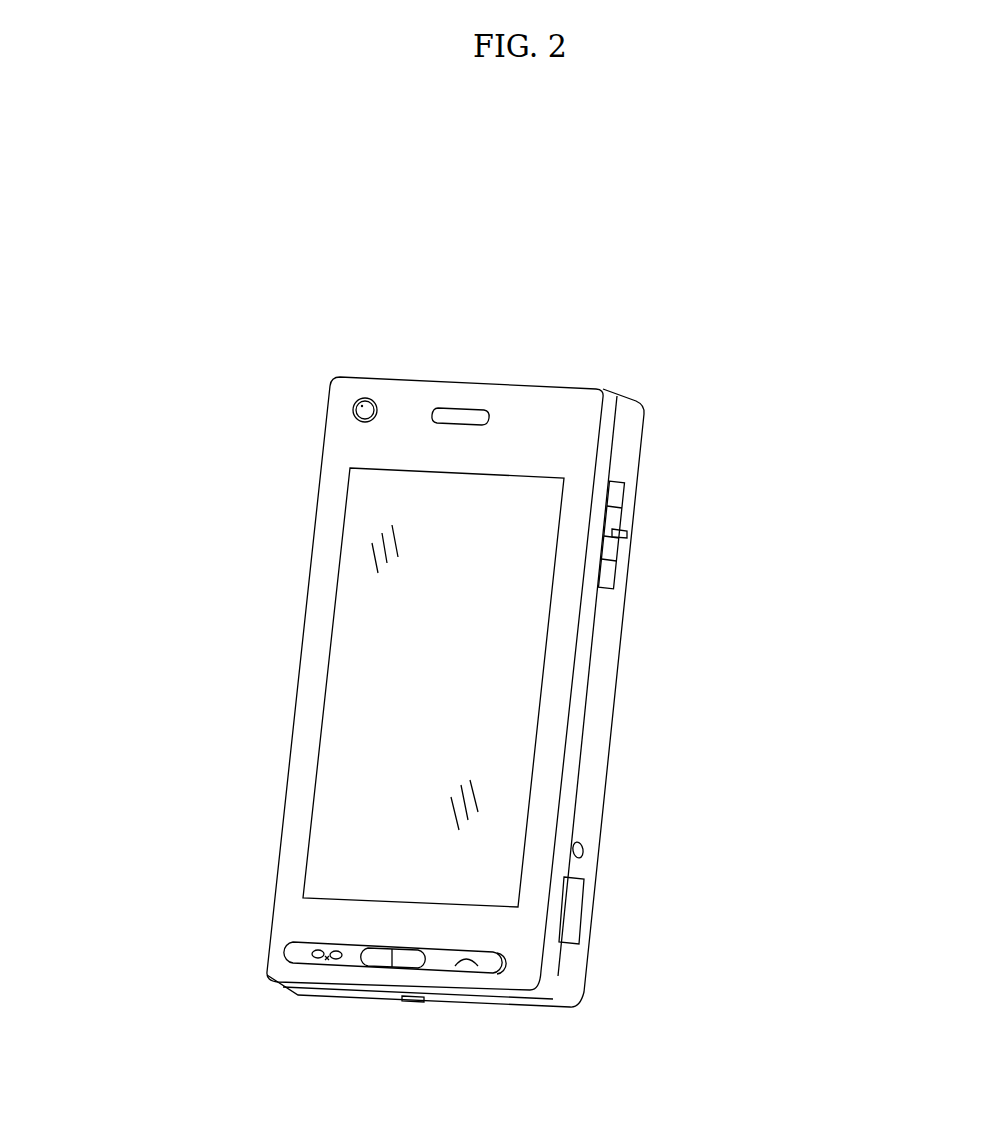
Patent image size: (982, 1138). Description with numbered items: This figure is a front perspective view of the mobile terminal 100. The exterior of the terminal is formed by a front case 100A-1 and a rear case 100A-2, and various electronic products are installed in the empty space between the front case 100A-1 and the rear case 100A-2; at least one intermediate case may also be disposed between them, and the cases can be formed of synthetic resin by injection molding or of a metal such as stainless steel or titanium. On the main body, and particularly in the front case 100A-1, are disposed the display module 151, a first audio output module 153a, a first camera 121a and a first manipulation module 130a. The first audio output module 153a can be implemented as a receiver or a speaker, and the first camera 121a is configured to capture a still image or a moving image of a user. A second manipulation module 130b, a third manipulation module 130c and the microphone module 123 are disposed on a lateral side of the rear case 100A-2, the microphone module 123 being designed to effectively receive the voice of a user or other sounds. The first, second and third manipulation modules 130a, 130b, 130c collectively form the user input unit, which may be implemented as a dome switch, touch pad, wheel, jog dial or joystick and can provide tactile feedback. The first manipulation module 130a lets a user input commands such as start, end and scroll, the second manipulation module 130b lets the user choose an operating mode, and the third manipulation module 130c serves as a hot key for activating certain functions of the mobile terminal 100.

The mobile terminal 100 is at (262, 335).
The front case 100A-1 is at (608, 393).
The rear case 100A-2 is at (630, 434).
The display module 151 is at (355, 668).
The first camera 121a is at (357, 396).
The first audio output module 153a is at (460, 410).
The second manipulation module 130b is at (625, 533).
The third manipulation module 130c is at (575, 902).
The first manipulation module 130a is at (320, 938).
The microphone module 123 is at (415, 1003).